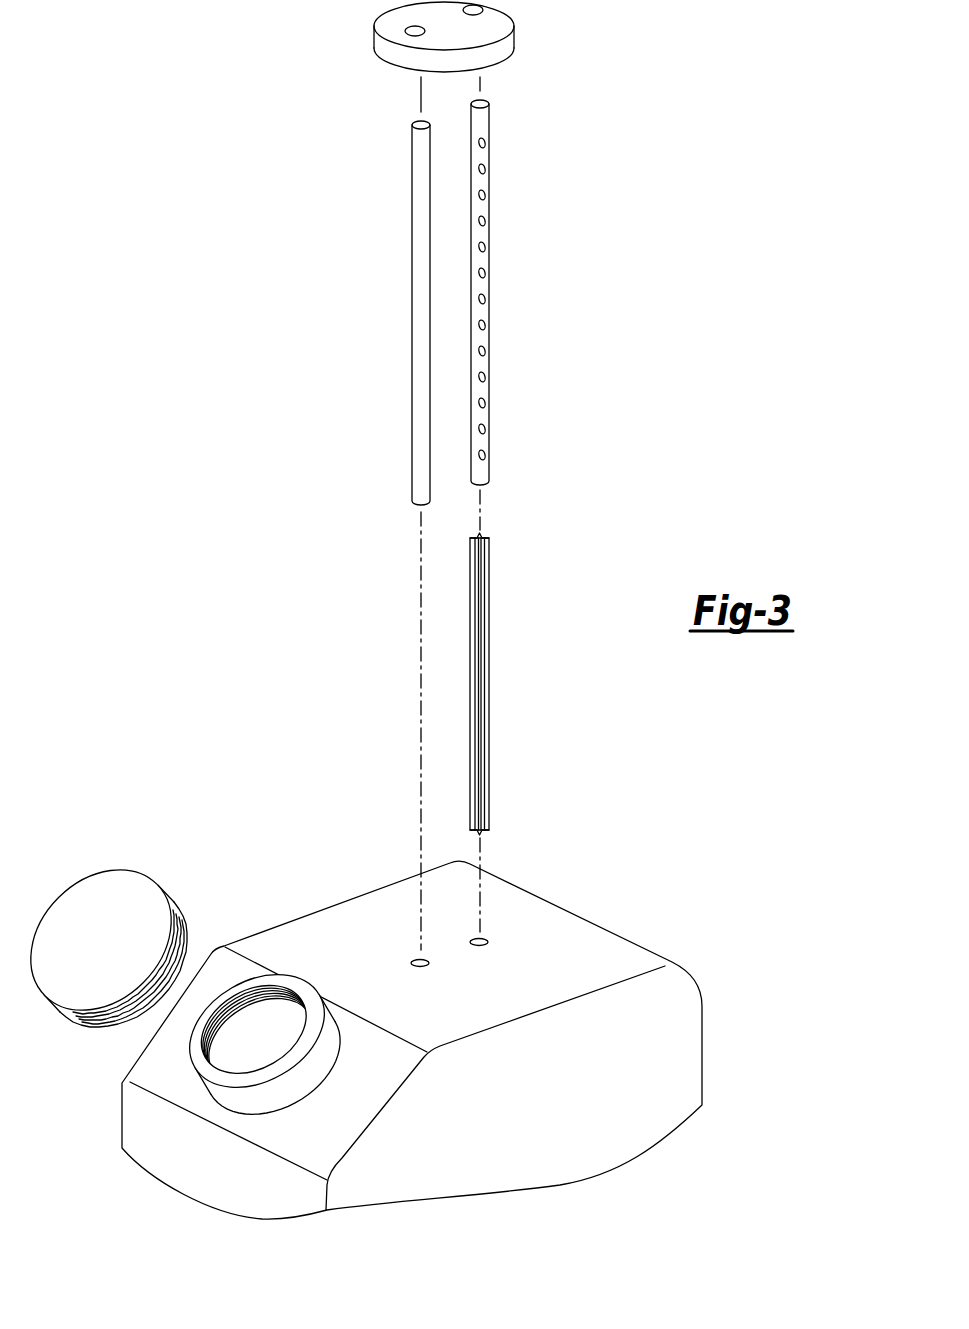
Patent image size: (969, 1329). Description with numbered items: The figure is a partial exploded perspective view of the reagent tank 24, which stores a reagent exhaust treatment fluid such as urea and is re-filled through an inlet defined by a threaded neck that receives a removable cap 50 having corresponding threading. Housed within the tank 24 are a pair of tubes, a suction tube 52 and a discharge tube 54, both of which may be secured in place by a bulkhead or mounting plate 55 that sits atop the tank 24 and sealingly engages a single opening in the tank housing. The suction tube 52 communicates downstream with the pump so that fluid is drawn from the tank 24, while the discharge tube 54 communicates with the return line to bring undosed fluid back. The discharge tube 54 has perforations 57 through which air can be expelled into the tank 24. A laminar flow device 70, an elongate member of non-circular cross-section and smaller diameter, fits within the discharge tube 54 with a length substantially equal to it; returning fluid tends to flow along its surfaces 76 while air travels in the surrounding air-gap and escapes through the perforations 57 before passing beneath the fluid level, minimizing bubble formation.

The reagent tank 24 is at (513, 1101).
The removable cap 50 is at (112, 905).
The suction tube 52 is at (413, 357).
The discharge tube 54 is at (515, 292).
The mounting plate 55 is at (487, 52).
The perforations 57 is at (486, 326).
The laminar flow device 70 is at (512, 684).
The surfaces 76 is at (486, 650).